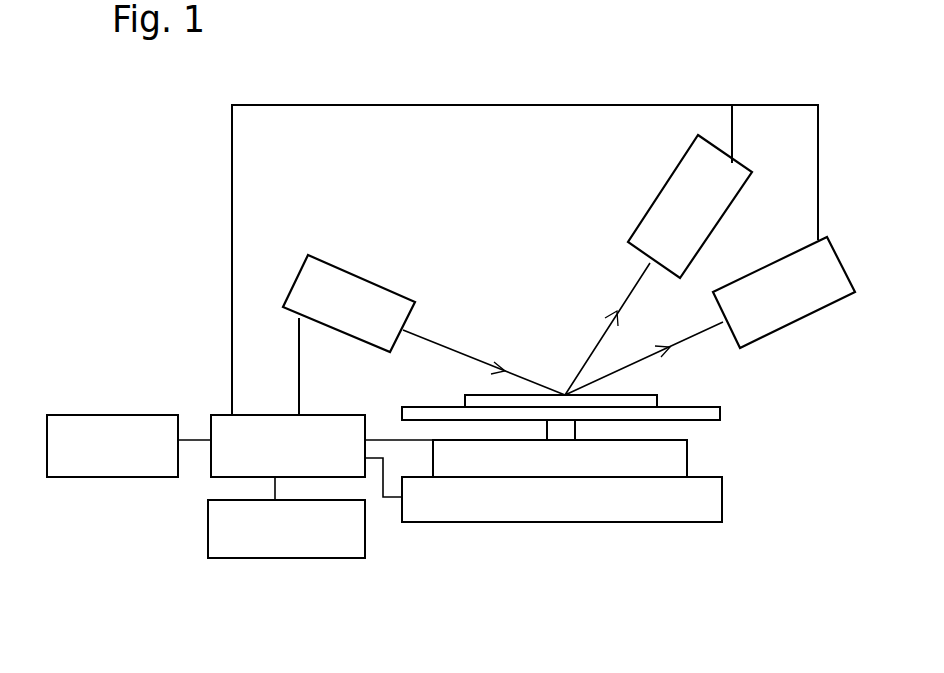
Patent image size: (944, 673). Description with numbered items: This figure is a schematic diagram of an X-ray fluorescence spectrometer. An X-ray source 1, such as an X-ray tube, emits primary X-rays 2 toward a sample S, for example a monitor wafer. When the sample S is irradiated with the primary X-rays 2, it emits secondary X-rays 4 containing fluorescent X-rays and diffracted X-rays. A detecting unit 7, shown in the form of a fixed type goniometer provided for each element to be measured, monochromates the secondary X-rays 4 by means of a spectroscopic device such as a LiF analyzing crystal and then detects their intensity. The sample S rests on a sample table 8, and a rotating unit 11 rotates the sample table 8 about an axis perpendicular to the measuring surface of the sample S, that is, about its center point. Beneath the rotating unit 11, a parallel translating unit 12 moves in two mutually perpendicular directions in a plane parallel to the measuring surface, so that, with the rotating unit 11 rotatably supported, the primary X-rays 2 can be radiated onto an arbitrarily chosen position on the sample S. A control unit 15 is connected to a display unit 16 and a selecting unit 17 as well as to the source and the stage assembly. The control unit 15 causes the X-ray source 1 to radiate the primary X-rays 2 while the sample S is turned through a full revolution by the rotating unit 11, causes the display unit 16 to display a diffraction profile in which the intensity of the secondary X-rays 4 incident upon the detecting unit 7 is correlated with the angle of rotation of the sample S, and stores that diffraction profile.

The X-ray source 1 is at (352, 274).
The primary X-rays 2 is at (470, 358).
The secondary X-rays 4 is at (605, 328).
The detecting unit 7 is at (660, 190).
The sample S is at (660, 397).
The sample table 8 is at (727, 408).
The rotating unit 11 is at (675, 458).
The parallel translating unit 12 is at (650, 505).
The control unit 15 is at (267, 412).
The display unit 16 is at (110, 413).
The selecting unit 17 is at (207, 522).